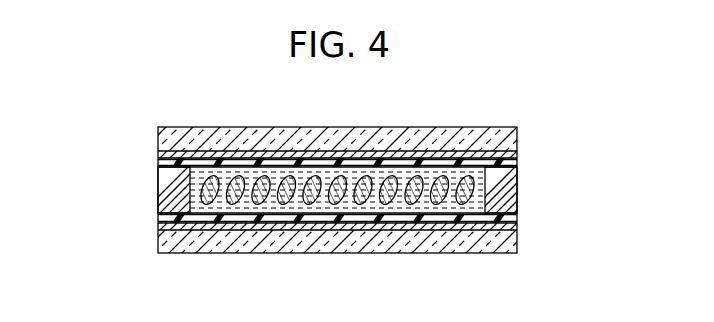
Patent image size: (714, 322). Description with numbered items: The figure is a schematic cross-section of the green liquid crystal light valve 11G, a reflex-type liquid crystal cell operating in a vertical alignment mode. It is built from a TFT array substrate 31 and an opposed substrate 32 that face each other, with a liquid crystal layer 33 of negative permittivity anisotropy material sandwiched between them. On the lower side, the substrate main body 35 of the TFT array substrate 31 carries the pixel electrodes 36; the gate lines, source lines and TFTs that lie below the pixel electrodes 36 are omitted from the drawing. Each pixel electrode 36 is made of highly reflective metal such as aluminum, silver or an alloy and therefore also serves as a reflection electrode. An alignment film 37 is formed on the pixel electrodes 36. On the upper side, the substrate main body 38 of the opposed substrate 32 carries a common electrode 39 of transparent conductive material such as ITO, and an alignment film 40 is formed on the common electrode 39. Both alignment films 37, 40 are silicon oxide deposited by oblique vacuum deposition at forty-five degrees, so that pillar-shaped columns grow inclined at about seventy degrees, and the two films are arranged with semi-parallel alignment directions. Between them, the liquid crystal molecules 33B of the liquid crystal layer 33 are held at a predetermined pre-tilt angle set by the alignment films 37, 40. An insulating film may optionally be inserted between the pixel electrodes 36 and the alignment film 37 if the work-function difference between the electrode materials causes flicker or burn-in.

The green liquid crystal light valve 11G is at (548, 139).
The TFT array substrate 31 is at (75, 205).
The opposed substrate 32 is at (75, 100).
The liquid crystal layer 33 is at (319, 238).
The liquid crystal molecules 33B is at (298, 192).
The substrate main body 35 is at (163, 242).
The pixel electrode 36 is at (168, 227).
The alignment film 37 is at (165, 219).
The substrate main body 38 is at (170, 140).
The common electrode 39 is at (167, 155).
The alignment film 40 is at (165, 162).